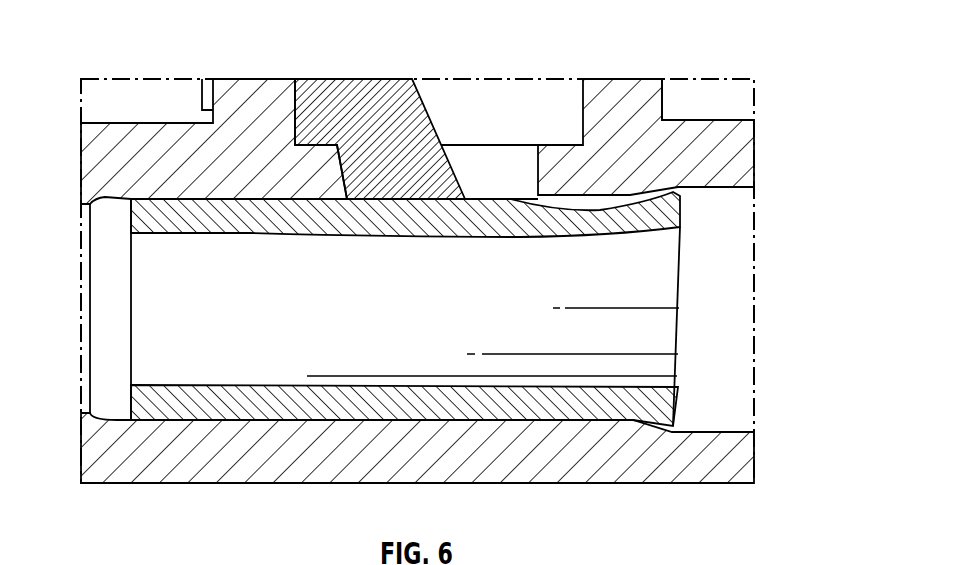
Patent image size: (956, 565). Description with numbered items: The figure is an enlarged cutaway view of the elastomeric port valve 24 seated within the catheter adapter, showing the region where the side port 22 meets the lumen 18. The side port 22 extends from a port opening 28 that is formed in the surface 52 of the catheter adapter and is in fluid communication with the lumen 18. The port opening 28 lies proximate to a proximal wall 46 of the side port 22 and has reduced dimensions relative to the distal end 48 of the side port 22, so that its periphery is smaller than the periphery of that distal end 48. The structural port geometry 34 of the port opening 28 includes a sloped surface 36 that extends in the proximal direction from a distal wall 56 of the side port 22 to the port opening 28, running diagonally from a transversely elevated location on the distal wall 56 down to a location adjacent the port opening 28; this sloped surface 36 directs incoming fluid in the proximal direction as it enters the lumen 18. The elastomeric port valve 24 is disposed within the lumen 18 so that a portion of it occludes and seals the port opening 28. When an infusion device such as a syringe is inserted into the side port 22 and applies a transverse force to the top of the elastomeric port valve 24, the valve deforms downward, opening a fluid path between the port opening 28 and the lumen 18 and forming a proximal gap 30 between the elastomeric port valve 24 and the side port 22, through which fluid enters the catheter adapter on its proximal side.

The lumen 18 is at (732, 278).
The side port 22 is at (468, 93).
The elastomeric port valve 24 is at (134, 201).
The port opening 28 is at (507, 203).
The proximal gap 30 is at (593, 208).
The structural port geometry 34 is at (476, 188).
The sloped surface 36 is at (350, 80).
The proximal wall 46 is at (622, 95).
The distal end 48 is at (208, 122).
The surface 52 is at (737, 120).
The distal wall 56 is at (240, 93).